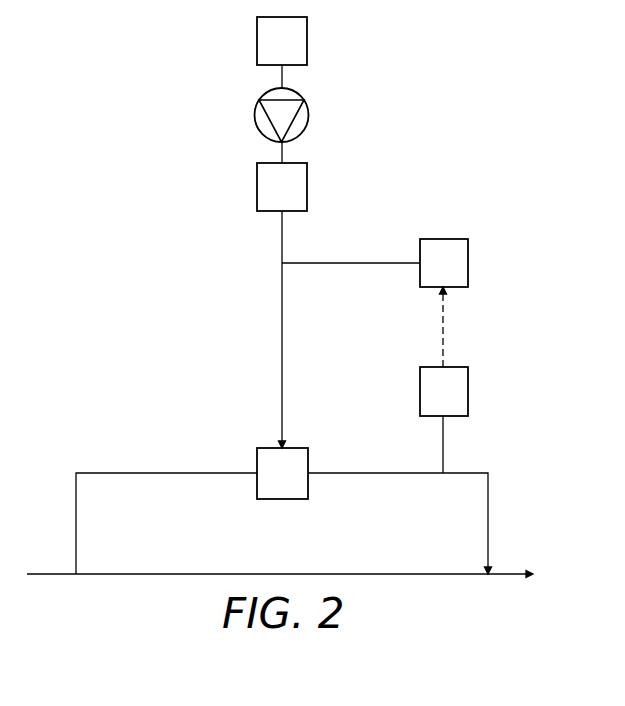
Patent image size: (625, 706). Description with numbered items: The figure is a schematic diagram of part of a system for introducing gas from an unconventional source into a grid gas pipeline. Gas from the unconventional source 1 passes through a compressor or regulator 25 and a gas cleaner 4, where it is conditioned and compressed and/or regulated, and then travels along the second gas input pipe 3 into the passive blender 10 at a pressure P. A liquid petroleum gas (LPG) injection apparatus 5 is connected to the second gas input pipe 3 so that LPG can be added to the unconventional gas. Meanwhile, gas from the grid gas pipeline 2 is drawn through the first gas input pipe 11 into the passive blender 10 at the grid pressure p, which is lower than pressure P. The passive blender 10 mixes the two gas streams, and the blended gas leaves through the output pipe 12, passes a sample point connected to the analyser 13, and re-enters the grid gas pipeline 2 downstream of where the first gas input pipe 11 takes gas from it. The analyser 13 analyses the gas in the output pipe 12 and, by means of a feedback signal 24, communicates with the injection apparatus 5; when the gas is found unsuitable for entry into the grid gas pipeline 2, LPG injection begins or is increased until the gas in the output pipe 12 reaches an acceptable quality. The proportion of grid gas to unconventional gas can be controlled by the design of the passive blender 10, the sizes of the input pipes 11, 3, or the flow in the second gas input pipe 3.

The unconventional source 1 is at (276, 51).
The compressor or regulator 25 is at (254, 114).
The gas cleaner 4 is at (276, 197).
The second gas input pipe 3 is at (282, 350).
The liquid petroleum gas (LPG) injection apparatus 5 is at (438, 273).
The feedback signal 24 is at (446, 322).
The analyser 13 is at (433, 401).
The passive blender 10 is at (271, 483).
The first gas input pipe 11 is at (76, 523).
The output pipe 12 is at (490, 523).
The grid gas pipeline 2 is at (383, 574).